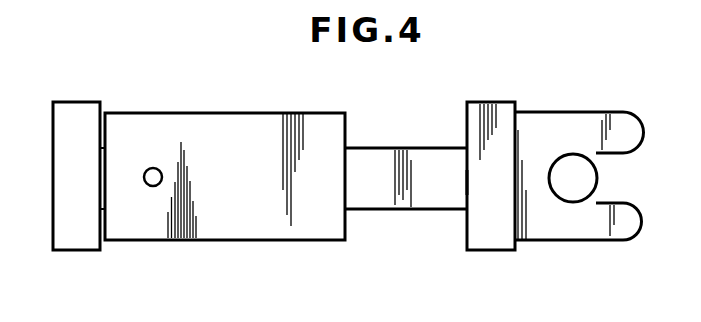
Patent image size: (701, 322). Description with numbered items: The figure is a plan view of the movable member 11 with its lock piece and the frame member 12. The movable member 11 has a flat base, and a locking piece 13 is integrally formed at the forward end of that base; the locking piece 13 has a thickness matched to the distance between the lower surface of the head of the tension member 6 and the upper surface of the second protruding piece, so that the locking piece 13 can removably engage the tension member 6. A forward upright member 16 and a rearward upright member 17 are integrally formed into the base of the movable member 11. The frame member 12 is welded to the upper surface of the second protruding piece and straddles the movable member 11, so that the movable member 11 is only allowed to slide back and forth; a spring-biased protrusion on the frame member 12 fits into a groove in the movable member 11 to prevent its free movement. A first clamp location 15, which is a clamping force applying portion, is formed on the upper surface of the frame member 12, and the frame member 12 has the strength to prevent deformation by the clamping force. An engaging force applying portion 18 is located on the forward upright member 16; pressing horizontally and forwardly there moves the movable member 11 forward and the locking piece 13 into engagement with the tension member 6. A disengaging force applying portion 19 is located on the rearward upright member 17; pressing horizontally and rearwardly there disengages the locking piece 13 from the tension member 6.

The tension member 6 is at (573, 193).
The movable member 11 is at (394, 160).
The frame member 12 is at (320, 233).
The locking piece 13 is at (567, 125).
The first clamp location 15 is at (215, 177).
The forward upright member 16 is at (487, 243).
The rearward upright member 17 is at (82, 243).
The engaging force applying portion 18 is at (468, 182).
The disengaging force applying portion 19 is at (107, 175).